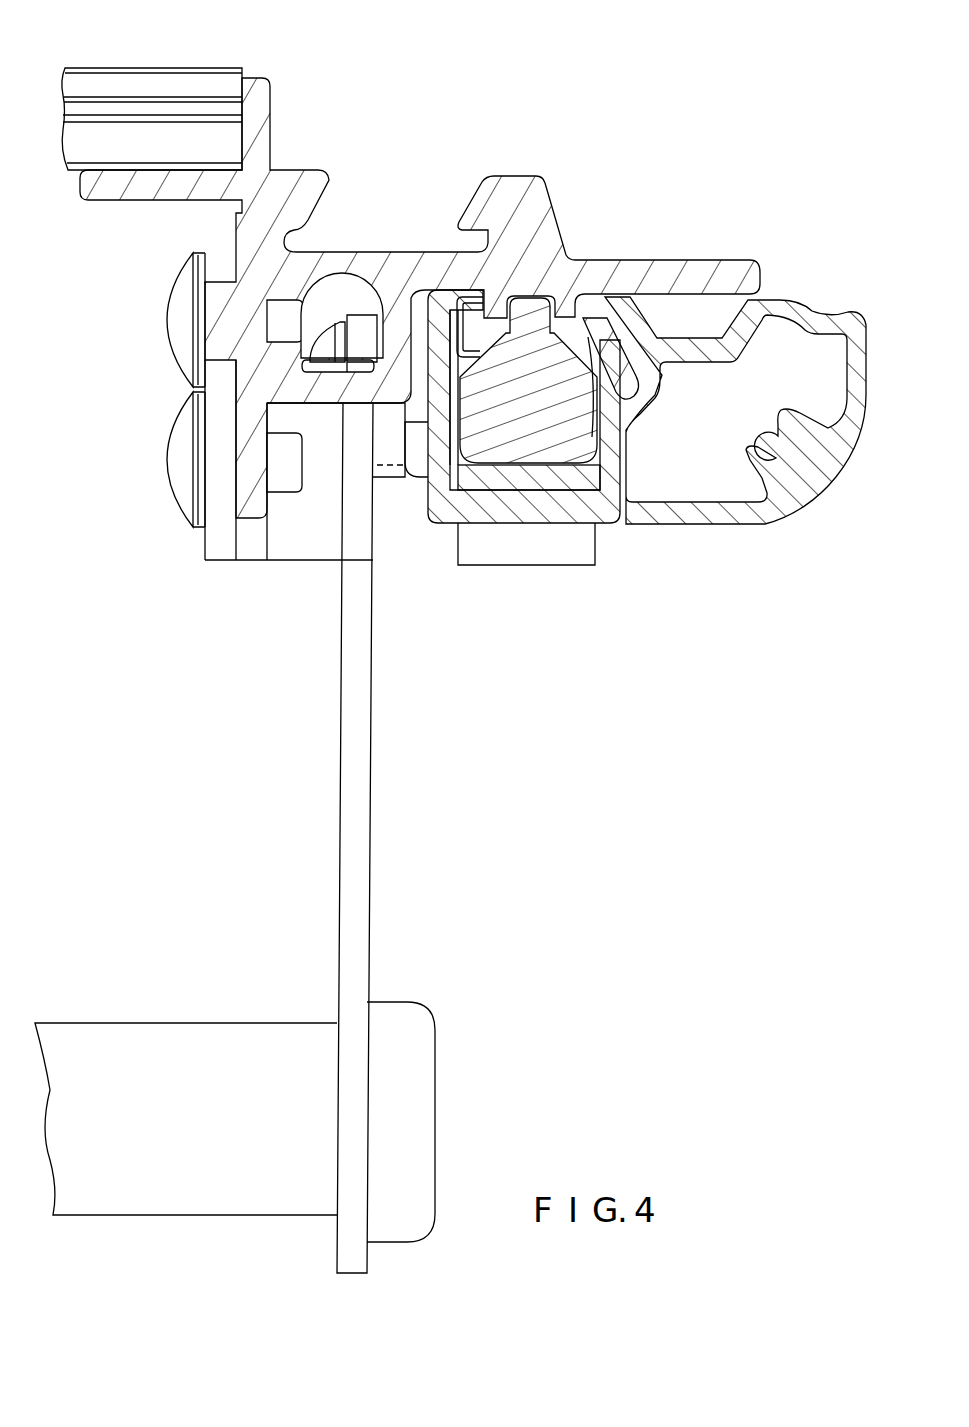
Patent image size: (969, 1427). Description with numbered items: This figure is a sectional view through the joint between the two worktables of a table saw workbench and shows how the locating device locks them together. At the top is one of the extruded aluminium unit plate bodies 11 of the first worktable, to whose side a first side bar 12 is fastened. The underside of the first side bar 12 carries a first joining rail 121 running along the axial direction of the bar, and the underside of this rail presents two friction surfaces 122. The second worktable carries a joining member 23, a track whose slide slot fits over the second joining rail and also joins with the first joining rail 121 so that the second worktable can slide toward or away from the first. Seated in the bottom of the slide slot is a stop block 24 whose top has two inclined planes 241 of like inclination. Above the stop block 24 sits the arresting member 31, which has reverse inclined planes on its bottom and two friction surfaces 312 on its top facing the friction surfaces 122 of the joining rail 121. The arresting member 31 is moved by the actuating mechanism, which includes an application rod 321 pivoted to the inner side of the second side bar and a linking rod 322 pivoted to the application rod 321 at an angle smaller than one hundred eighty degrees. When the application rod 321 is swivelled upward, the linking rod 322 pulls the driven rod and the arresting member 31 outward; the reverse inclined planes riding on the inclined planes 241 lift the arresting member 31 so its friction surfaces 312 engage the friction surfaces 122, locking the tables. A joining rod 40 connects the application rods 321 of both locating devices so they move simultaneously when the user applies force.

The unit plate body 11 is at (210, 70).
The first side bar 12 is at (590, 262).
The first joining rail 121 is at (607, 370).
The friction surface 122 is at (612, 385).
The joining member 23 is at (778, 517).
The stop block 24 is at (457, 565).
The inclined plane 241 is at (606, 432).
The arresting member 31 is at (542, 452).
The friction surface 312 is at (482, 357).
The application rod 321 is at (352, 757).
The linking rod 322 is at (389, 468).
The joining rod 40 is at (192, 1043).